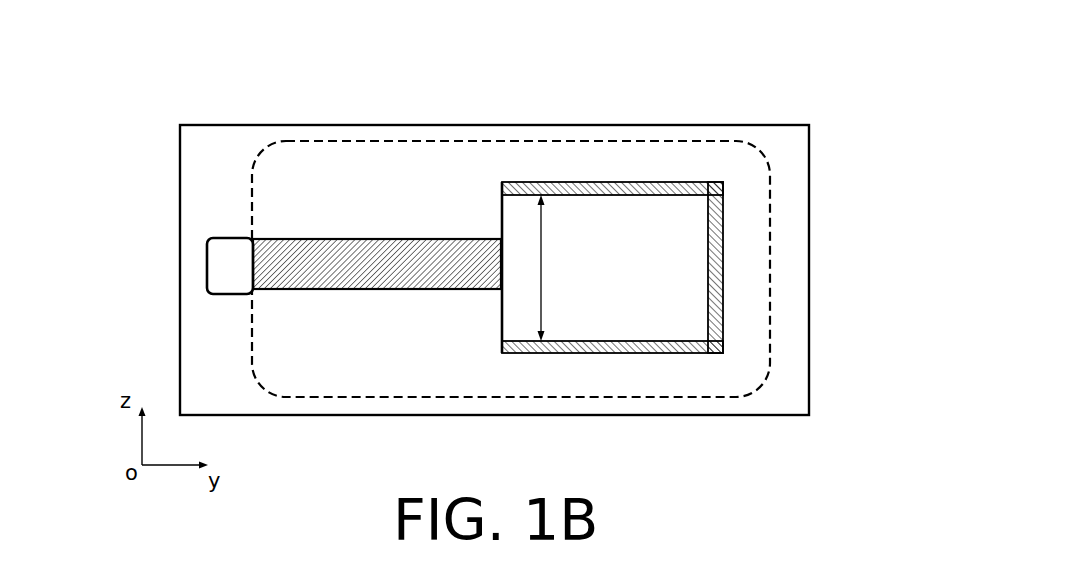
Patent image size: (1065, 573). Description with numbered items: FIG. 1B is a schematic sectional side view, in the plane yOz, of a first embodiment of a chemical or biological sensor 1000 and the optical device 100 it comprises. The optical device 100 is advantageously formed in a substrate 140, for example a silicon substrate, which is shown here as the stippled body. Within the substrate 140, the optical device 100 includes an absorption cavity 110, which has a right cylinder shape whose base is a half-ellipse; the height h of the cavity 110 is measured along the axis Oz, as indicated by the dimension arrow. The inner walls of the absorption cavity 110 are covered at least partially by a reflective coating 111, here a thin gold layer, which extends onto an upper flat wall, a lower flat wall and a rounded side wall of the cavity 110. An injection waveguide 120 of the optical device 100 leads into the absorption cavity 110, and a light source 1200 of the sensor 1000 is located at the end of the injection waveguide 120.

The chemical or biological sensor 1000 is at (498, 255).
The optical device 100 is at (358, 142).
The substrate 140 is at (427, 203).
The light source 1200 is at (223, 265).
The injection waveguide 120 is at (350, 268).
The absorption cavity 110 is at (705, 214).
The reflective coating 111 is at (616, 182).